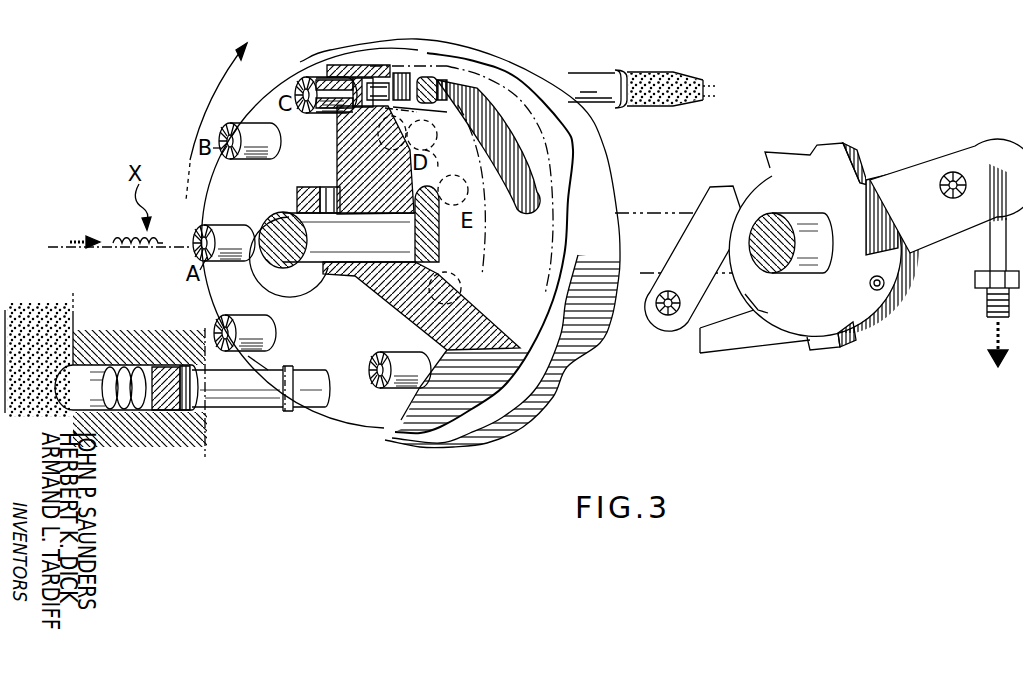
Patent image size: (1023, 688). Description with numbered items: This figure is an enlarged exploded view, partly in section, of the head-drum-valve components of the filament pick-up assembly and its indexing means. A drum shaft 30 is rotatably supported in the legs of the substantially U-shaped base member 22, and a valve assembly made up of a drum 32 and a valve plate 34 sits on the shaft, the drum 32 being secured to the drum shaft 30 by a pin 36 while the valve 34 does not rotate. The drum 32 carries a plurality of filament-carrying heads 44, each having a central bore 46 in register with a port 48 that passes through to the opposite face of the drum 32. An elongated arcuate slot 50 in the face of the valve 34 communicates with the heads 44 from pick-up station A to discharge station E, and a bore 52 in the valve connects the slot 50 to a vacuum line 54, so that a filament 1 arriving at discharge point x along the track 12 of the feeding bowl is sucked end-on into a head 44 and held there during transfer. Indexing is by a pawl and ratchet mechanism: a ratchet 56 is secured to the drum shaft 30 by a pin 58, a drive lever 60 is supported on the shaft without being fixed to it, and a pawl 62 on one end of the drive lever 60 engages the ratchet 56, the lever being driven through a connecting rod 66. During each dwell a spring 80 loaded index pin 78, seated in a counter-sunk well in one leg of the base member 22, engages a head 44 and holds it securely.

The filament 1 is at (134, 241).
The track 12 is at (160, 262).
The base member 22 is at (206, 438).
The drum shaft 30 is at (277, 262).
The drum 32 is at (273, 110).
The valve plate 34 is at (527, 64).
The pin 36 is at (332, 187).
The filament-carrying heads 44 is at (312, 83).
The central bore 46 is at (320, 88).
The port 48 is at (374, 90).
The elongated arcuate slot 50 is at (523, 178).
The bore 52 is at (437, 80).
The vacuum line 54 is at (653, 72).
The ratchet 56 is at (860, 179).
The pin 58 is at (886, 290).
The drive lever 60 is at (927, 170).
The pawl 62 is at (708, 202).
The connecting rod 66 is at (990, 258).
The index pin 78 is at (247, 400).
The spring 80 is at (152, 365).